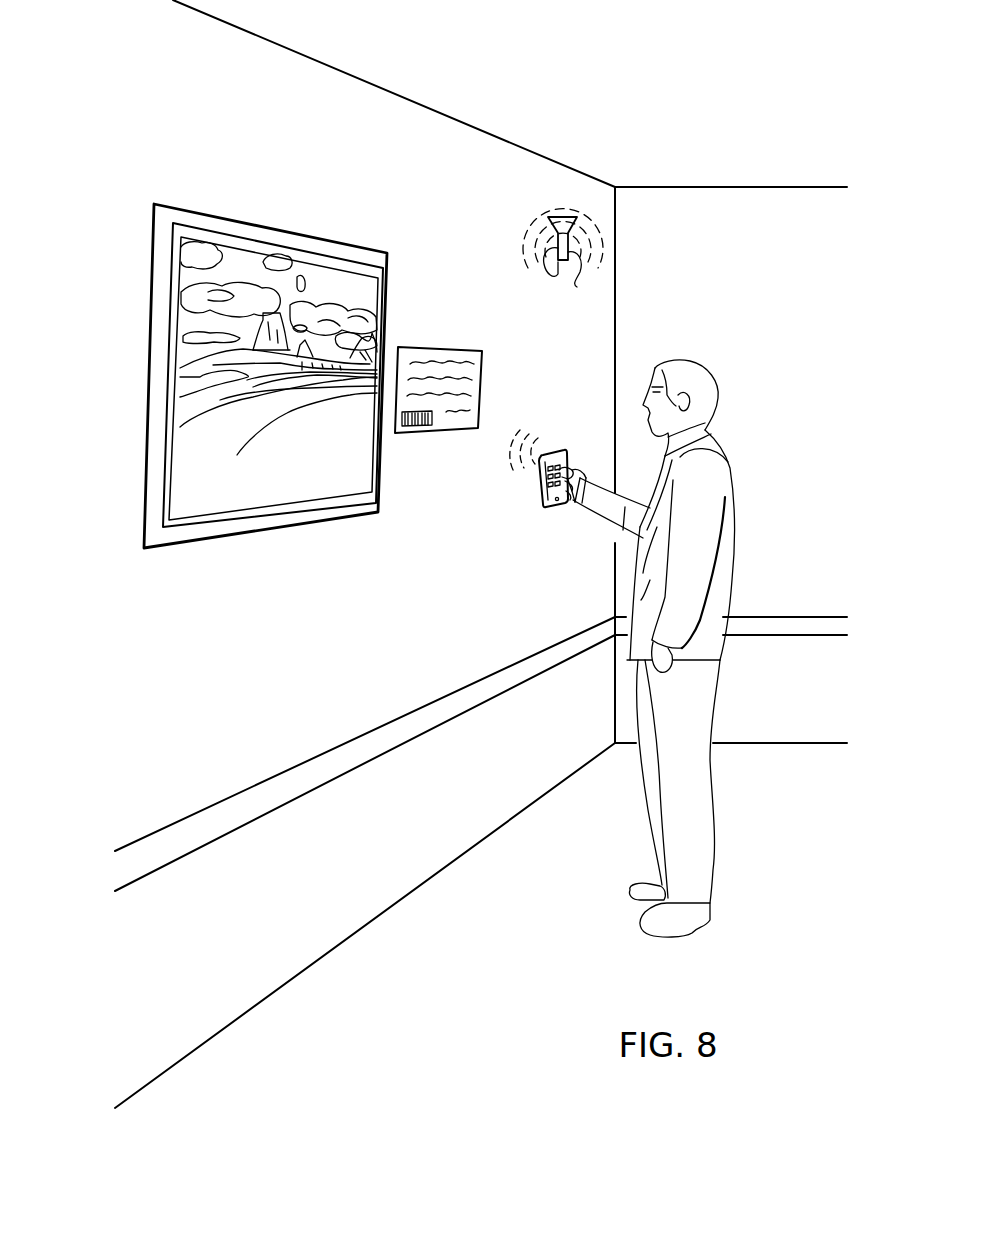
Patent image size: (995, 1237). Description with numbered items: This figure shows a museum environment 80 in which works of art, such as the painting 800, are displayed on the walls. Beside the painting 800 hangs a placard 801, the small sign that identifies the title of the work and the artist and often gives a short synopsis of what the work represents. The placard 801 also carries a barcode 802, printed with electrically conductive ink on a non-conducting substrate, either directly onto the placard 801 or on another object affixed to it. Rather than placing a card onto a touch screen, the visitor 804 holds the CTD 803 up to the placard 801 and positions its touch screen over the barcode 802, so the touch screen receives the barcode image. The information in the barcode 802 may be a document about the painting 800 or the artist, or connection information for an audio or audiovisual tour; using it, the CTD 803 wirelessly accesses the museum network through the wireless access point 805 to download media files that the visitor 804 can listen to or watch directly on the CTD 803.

The museum environment 80 is at (147, 144).
The painting 800 is at (152, 373).
The placard 801 is at (440, 358).
The barcode 802 is at (424, 427).
The CTD 803 is at (552, 518).
The visitor 804 is at (701, 364).
The wireless access point 805 is at (580, 262).